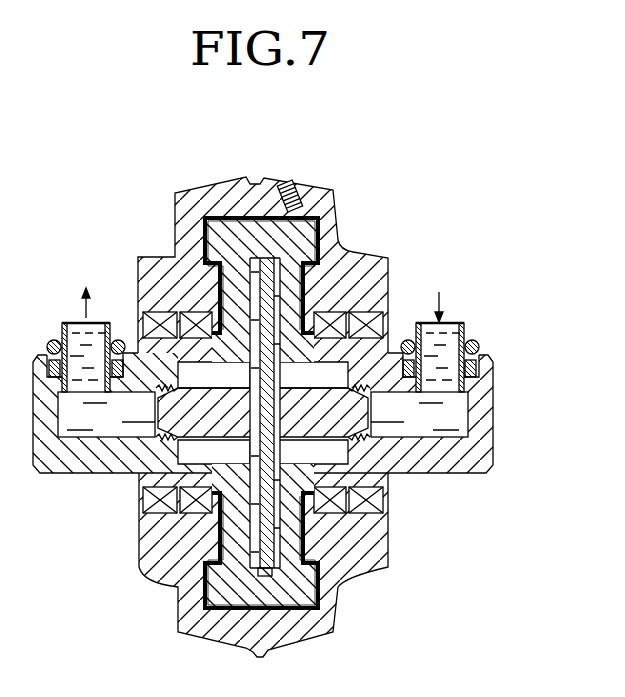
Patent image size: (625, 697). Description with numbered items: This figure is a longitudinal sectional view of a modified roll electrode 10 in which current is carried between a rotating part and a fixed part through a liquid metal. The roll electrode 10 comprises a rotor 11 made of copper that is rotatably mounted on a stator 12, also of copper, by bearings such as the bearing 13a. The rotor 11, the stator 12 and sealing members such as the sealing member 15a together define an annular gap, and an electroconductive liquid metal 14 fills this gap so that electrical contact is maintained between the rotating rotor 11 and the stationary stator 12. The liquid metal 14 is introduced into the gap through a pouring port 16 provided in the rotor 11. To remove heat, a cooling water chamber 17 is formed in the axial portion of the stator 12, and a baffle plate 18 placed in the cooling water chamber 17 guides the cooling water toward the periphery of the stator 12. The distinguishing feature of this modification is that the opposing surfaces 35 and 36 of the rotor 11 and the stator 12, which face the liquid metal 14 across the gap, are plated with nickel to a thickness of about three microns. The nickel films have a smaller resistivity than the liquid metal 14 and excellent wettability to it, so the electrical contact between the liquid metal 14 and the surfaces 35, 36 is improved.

The roll electrode 10 is at (407, 208).
The rotor 11 is at (175, 256).
The stator 12 is at (480, 452).
The bearing 13a is at (368, 316).
The liquid metal 14 is at (295, 373).
The sealing member 15a is at (333, 311).
The pouring port 16 is at (294, 191).
The cooling water chamber 17 is at (457, 412).
The baffle plate 18 is at (315, 237).
The opposing surface of the rotor 35 is at (320, 222).
The opposing surface of the stator 36 is at (253, 226).